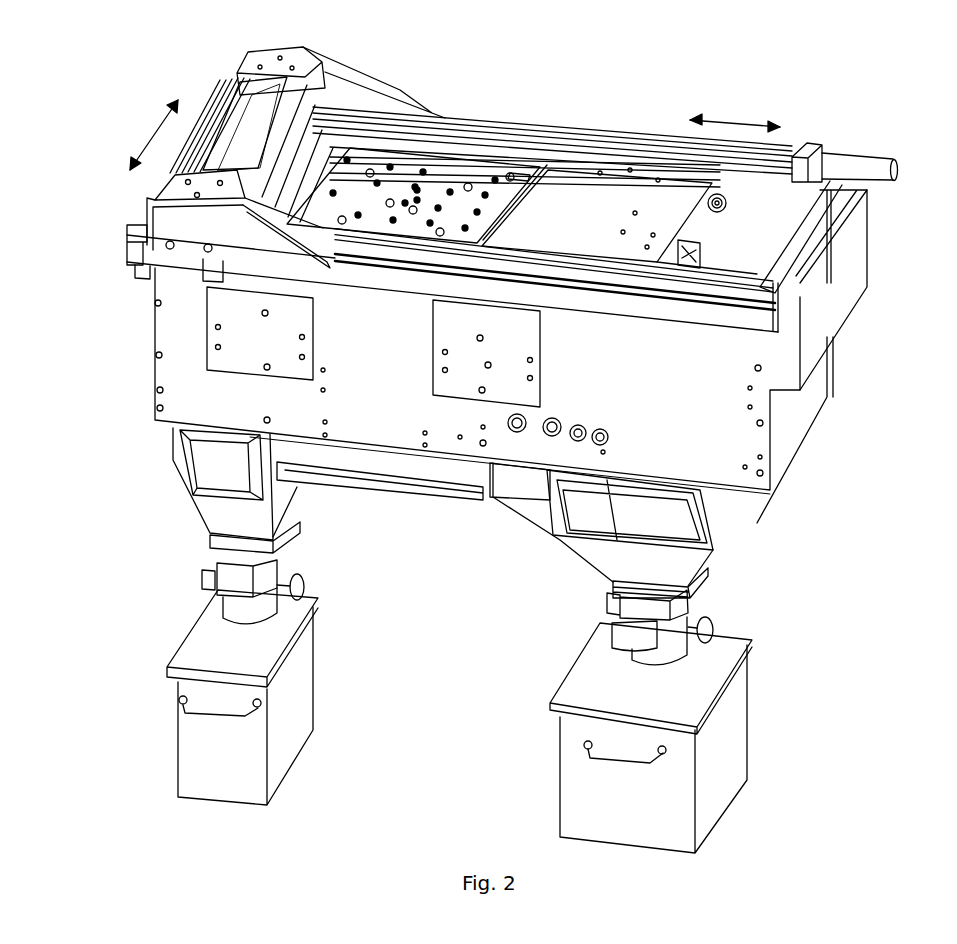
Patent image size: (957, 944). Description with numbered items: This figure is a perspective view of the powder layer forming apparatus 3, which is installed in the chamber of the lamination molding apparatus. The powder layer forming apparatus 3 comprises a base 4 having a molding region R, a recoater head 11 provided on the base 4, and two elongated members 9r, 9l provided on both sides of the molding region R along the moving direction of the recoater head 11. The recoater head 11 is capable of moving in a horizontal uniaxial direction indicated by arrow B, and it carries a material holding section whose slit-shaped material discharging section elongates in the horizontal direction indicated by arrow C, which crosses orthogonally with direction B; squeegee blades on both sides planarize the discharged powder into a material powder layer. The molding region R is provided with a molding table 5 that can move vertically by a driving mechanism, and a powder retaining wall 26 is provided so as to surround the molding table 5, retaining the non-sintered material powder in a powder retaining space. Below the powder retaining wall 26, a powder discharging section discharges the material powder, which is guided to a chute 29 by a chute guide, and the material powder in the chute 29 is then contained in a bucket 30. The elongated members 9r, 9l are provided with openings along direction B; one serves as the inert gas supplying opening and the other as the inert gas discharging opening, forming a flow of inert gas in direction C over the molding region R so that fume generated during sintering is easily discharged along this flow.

The powder layer forming apparatus 3 is at (857, 124).
The base 4 is at (167, 372).
The molding table 5 is at (403, 172).
The molding region R is at (458, 175).
The elongated member 9r is at (641, 131).
The elongated member 9l is at (552, 260).
The recoater head 11 is at (205, 92).
The powder retaining wall 26 is at (340, 158).
The chute 29 is at (214, 511).
The bucket 30 is at (197, 752).
The arrow B (moving direction of recoater head) B is at (735, 112).
The arrow C (direction of inert gas flow / slit direction) C is at (152, 135).